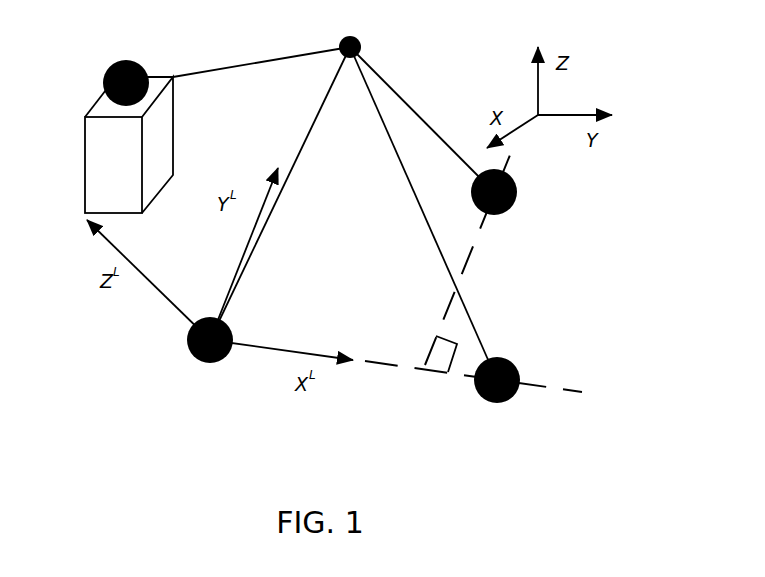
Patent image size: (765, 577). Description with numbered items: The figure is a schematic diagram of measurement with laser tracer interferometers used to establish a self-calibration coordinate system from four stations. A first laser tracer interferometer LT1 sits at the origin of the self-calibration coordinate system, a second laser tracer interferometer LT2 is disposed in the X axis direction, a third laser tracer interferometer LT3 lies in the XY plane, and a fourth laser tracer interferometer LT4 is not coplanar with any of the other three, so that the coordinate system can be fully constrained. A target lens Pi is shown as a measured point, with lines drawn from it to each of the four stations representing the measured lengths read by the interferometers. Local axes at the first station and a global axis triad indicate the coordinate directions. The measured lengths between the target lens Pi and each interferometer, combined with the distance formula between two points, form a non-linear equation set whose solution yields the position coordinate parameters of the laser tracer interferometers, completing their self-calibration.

The first laser tracer interferometer LT1 is at (220, 281).
The second laser tracer interferometer LT2 is at (470, 383).
The third laser tracer interferometer LT3 is at (512, 204).
The fourth laser tracer interferometer LT4 is at (132, 121).
The target lens Pi is at (335, 198).